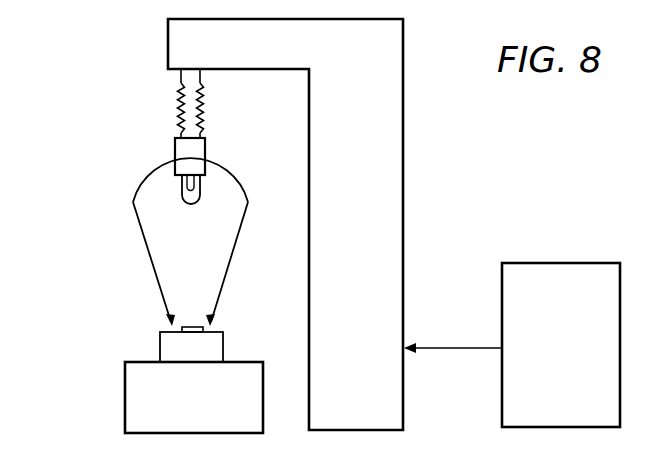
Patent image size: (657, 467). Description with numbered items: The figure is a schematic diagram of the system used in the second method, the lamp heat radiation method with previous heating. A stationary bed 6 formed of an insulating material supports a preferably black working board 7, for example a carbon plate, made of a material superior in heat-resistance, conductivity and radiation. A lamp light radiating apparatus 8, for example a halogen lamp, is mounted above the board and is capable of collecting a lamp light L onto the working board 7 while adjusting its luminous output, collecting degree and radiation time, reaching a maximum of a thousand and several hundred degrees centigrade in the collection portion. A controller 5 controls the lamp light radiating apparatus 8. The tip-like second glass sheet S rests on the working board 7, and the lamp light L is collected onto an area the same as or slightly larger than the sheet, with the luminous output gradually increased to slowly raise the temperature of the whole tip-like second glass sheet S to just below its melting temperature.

The controller 5 is at (560, 263).
The stationary bed 6 is at (125, 407).
The working board 7 is at (160, 342).
The lamp light radiating apparatus 8 is at (405, 178).
The tip-like second glass sheet S is at (193, 325).
The lamp light L is at (225, 282).